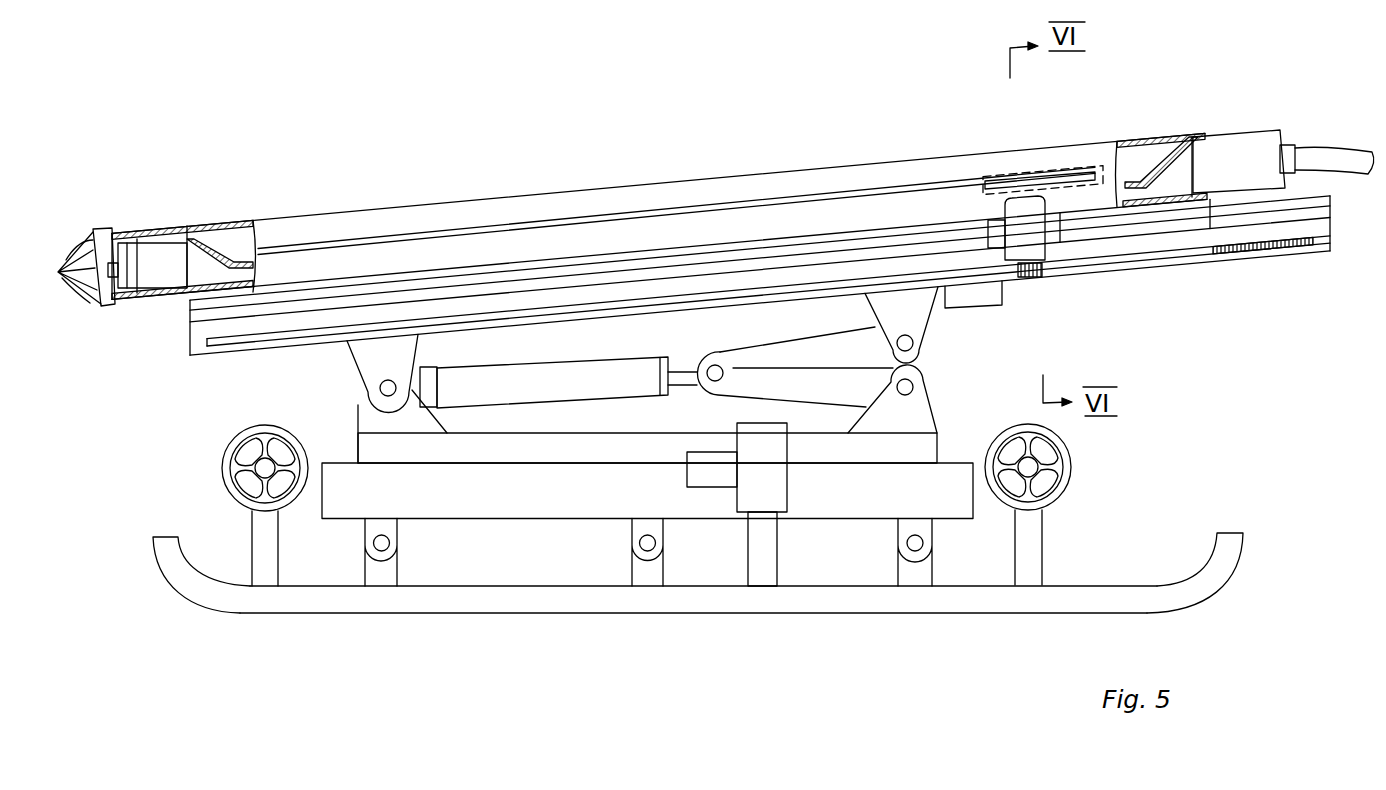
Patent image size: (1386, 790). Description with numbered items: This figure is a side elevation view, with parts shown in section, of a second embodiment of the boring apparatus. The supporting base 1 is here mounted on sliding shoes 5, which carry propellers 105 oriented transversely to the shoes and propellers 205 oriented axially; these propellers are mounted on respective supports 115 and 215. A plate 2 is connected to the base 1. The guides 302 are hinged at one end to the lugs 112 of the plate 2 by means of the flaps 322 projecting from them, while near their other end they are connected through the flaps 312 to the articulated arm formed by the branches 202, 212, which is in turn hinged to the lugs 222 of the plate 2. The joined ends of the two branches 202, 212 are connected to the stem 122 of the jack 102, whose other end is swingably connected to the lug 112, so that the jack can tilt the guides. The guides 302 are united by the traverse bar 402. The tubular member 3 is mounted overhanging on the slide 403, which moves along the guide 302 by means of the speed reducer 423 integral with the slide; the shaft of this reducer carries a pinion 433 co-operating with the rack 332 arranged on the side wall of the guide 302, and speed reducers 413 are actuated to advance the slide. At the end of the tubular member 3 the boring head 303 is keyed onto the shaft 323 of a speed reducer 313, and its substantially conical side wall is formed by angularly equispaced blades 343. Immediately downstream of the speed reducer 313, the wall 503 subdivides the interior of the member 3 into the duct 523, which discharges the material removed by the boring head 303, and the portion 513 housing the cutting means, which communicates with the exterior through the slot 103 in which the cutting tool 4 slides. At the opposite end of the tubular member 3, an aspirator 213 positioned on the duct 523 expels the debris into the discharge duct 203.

The supporting base 1 is at (343, 508).
The plate 2 is at (927, 447).
The tubular member 3 is at (372, 209).
The cutting tool 4 is at (1002, 185).
The sliding shoes 5 is at (498, 608).
The jack 102 is at (592, 368).
The slot 103 is at (555, 220).
The propellers 105 is at (222, 466).
The lugs 112 is at (367, 415).
The supports 115 is at (258, 534).
The stem 122 is at (690, 367).
The articulated arm branch 202 is at (733, 395).
The discharge duct 203 is at (1315, 147).
The propellers 205 is at (750, 498).
The articulated arm branch 212 is at (797, 343).
The aspirator 213 is at (1232, 142).
The supports 215 is at (767, 563).
The lugs 222 is at (917, 403).
The guides 302 is at (203, 352).
The boring head 303 is at (98, 228).
The flaps 312 is at (918, 322).
The speed reducer 313 is at (155, 252).
The flaps 322 is at (370, 362).
The shaft 323 is at (117, 278).
The rack 332 is at (1273, 248).
The blades 343 is at (88, 273).
The traverse bar 402 is at (995, 293).
The slide 403 is at (1187, 222).
The speed reducers 413 is at (1042, 232).
The speed reducer 423 is at (1037, 265).
The pinion 433 is at (1040, 277).
The wall 503 is at (214, 233).
The portion 513 is at (236, 238).
The duct 523 is at (238, 278).